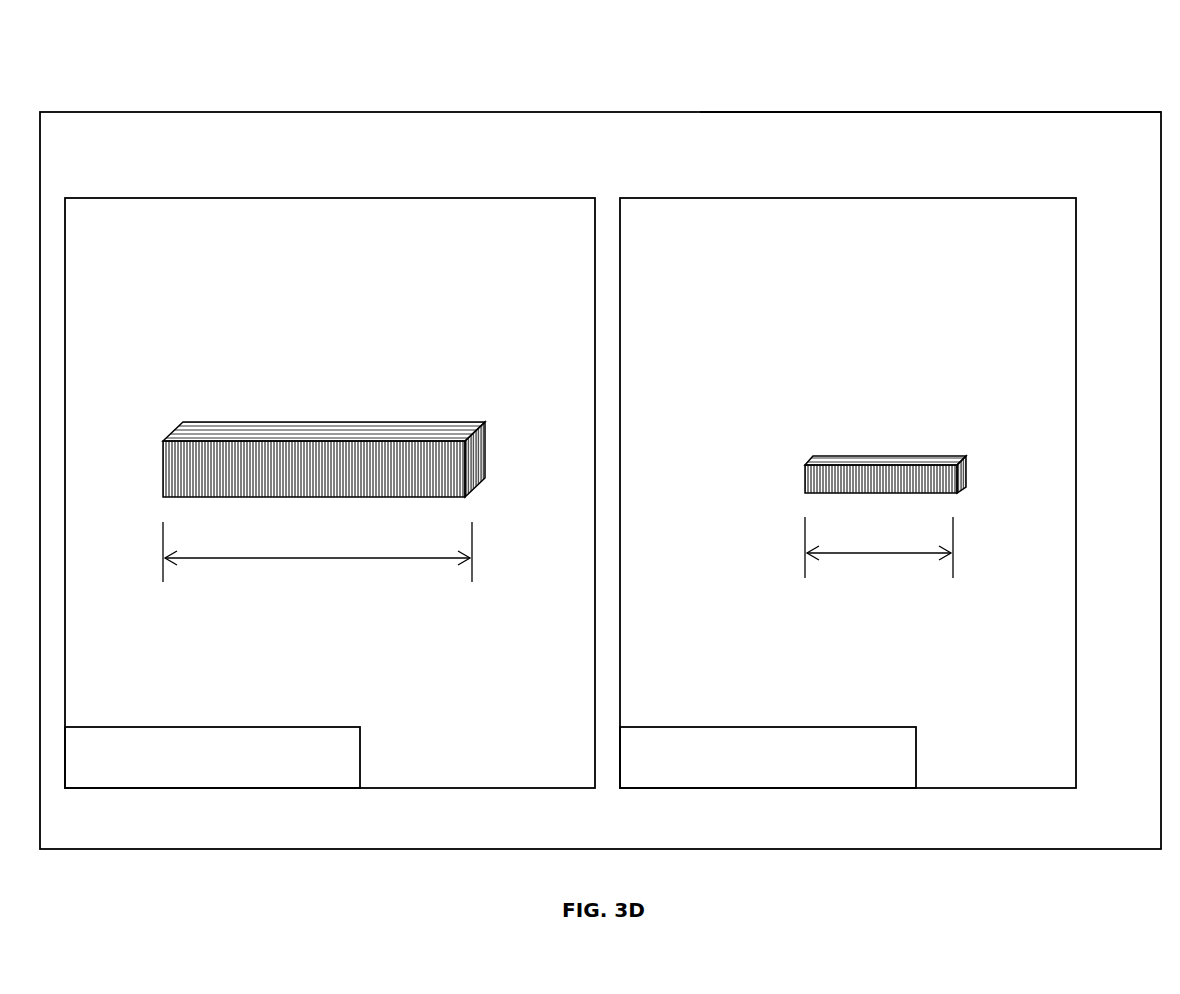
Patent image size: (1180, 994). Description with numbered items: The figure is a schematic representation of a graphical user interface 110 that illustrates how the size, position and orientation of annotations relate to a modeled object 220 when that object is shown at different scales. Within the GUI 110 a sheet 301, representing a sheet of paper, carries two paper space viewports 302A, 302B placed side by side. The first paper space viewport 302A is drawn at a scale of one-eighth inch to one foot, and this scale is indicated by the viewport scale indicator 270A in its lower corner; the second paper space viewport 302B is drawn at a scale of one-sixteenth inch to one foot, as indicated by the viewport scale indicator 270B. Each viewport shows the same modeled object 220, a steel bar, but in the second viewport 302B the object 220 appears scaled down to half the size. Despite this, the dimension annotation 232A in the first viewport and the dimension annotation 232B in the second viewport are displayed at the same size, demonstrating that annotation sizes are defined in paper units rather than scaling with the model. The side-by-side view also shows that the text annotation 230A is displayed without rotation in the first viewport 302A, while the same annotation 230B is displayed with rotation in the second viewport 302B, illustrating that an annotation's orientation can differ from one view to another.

The graphical user interface 110 is at (92, 89).
The sheet 301 is at (983, 113).
The first paper space viewport 302A is at (552, 197).
The second paper space viewport 302B is at (1058, 197).
The text annotation 230A is at (275, 300).
The rotated text annotation 230B is at (693, 297).
The modeled object 220 is at (475, 422).
The dimension annotation 232A is at (262, 607).
The dimension annotation 232B is at (842, 602).
The viewport scale indicator 270A is at (278, 727).
The viewport scale indicator 270B is at (835, 727).